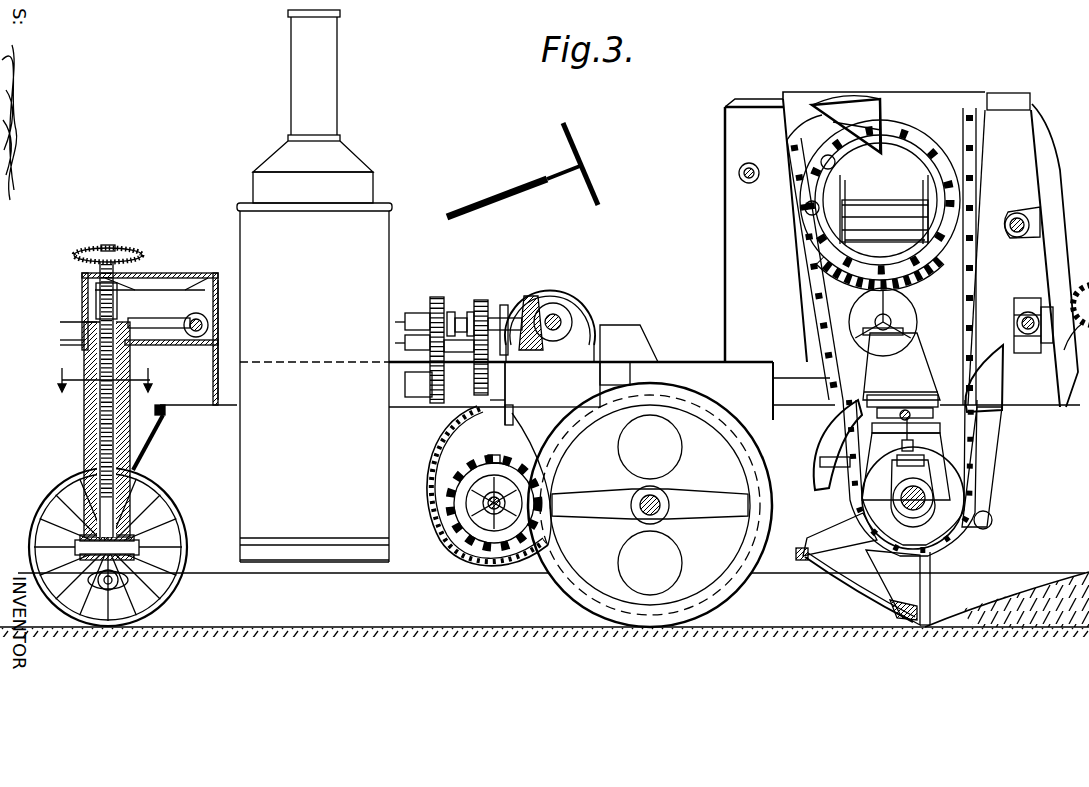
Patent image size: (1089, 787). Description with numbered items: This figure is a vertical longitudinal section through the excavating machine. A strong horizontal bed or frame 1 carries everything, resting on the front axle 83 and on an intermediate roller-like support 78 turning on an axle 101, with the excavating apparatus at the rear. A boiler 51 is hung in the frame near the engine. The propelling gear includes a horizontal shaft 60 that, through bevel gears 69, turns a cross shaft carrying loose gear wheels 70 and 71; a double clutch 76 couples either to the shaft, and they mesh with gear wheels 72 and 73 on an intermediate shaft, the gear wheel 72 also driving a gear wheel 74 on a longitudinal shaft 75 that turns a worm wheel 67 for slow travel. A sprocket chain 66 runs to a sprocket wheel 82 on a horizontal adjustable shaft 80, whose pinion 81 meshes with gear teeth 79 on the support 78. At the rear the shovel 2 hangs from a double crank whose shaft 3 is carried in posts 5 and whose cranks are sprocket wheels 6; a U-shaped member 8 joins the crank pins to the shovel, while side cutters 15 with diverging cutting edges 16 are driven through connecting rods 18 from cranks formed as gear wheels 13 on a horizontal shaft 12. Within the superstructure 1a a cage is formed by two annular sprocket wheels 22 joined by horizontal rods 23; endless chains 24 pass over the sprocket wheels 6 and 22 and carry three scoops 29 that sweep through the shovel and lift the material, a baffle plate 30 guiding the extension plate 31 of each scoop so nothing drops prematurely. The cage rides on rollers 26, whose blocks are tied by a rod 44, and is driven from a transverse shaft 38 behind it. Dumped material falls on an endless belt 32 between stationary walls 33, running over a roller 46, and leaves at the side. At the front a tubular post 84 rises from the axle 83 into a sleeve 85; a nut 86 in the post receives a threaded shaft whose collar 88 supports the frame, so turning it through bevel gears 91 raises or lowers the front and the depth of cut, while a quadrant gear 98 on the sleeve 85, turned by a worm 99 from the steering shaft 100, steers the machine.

The bed or frame 1 is at (170, 272).
The superstructure 1a is at (750, 125).
The shovel 2 is at (830, 595).
The shaft 3 is at (903, 505).
The posts 5 is at (916, 442).
The sprocket wheels 6 is at (948, 500).
The U-shaped member 8 is at (836, 536).
The horizontal shaft 12 is at (1028, 312).
The gear wheels 13 is at (1060, 255).
The blade 15 is at (893, 587).
The cutting edges 16 is at (934, 592).
The connecting rods 18 is at (1000, 462).
The sprocket wheels 22 is at (912, 280).
The horizontal rods 23 is at (822, 185).
The endless chains 24 is at (978, 300).
The rollers 26 is at (800, 160).
The auxiliary shovels or scoops 29 is at (865, 104).
The baffle plate or shield 30 is at (950, 165).
The extension plate 31 is at (968, 405).
The endless belt 32 is at (885, 210).
The stationary walls 33 is at (884, 204).
The transverse horizontal shaft 38 is at (1012, 214).
The rod or shaft 44 is at (740, 178).
The roller 46 is at (878, 232).
The boiler 51 is at (314, 286).
The horizontal shaft 60 is at (562, 320).
The sprocket chain 66 is at (460, 440).
The worm wheel 67 is at (578, 298).
The bevel gears 69 is at (536, 305).
The gear wheel 70 is at (437, 297).
The gear wheel 71 is at (488, 305).
The gear wheel 72 is at (448, 345).
The gear wheel 73 is at (510, 345).
The gear wheel 74 is at (444, 385).
The longitudinal shaft 75 is at (492, 405).
The double clutch 76 is at (458, 312).
The intermediate roller-like support 78 is at (558, 577).
The gear teeth 79 is at (548, 532).
The horizontal adjustable shaft 80 is at (510, 492).
The pinion 81 is at (100, 318).
The sprocket wheel 82 is at (478, 545).
The front axle 83 is at (84, 503).
The post 84 is at (128, 510).
The sleeve 85 is at (130, 410).
The nut 86 is at (130, 440).
The collar 88 is at (118, 292).
The bevel gears 91 is at (125, 252).
The quadrant gear 98 is at (150, 318).
The worm 99 is at (216, 322).
The steering shaft 100 is at (492, 200).
The axle 101 is at (664, 495).